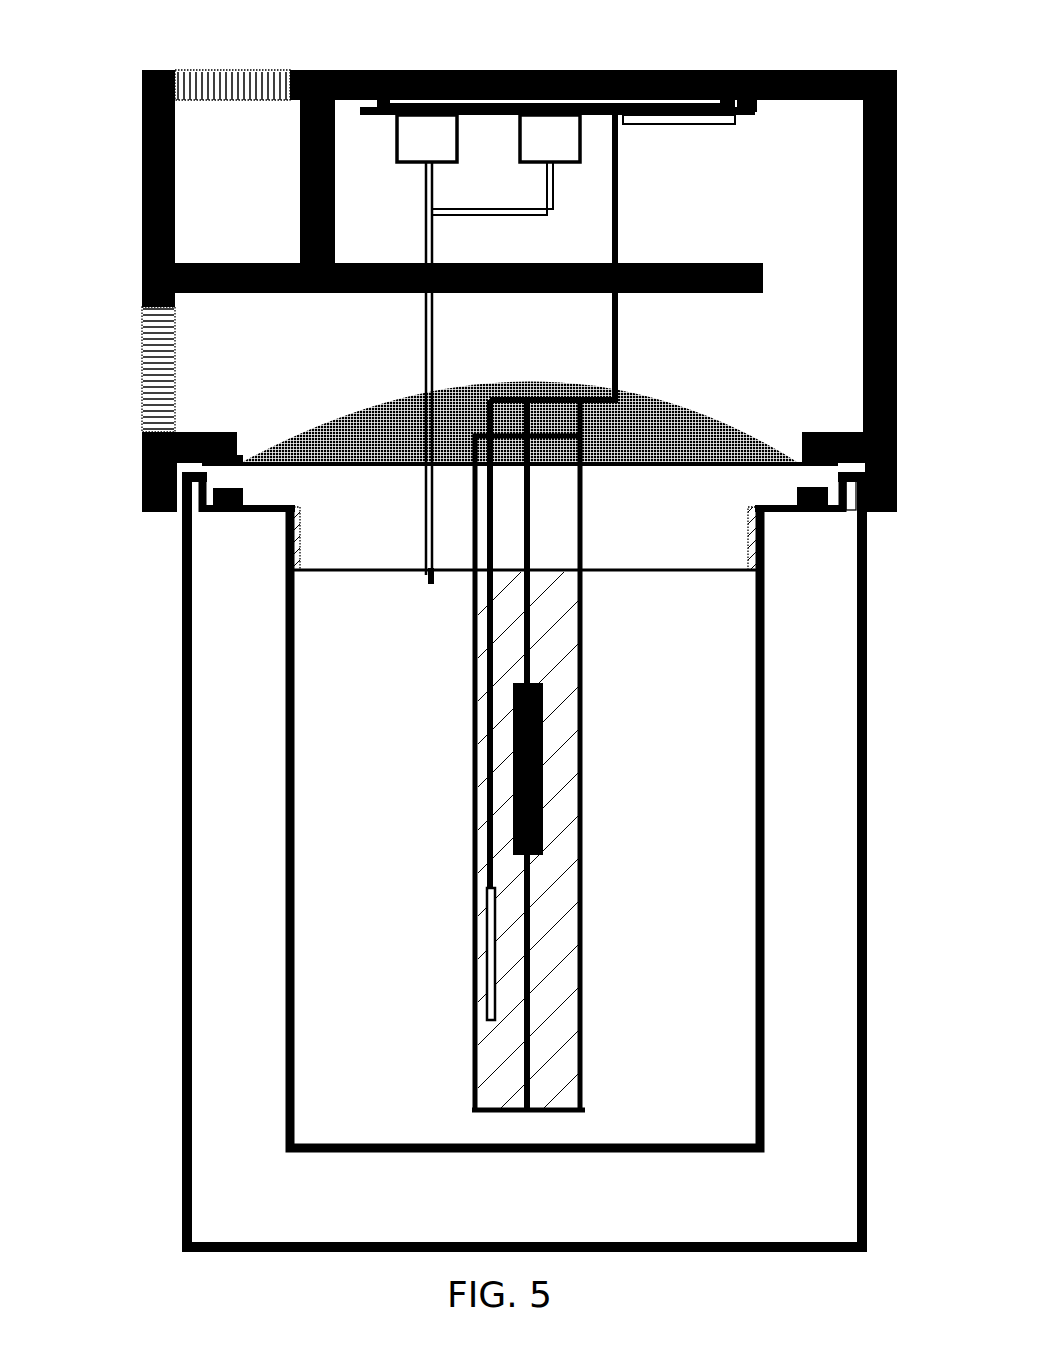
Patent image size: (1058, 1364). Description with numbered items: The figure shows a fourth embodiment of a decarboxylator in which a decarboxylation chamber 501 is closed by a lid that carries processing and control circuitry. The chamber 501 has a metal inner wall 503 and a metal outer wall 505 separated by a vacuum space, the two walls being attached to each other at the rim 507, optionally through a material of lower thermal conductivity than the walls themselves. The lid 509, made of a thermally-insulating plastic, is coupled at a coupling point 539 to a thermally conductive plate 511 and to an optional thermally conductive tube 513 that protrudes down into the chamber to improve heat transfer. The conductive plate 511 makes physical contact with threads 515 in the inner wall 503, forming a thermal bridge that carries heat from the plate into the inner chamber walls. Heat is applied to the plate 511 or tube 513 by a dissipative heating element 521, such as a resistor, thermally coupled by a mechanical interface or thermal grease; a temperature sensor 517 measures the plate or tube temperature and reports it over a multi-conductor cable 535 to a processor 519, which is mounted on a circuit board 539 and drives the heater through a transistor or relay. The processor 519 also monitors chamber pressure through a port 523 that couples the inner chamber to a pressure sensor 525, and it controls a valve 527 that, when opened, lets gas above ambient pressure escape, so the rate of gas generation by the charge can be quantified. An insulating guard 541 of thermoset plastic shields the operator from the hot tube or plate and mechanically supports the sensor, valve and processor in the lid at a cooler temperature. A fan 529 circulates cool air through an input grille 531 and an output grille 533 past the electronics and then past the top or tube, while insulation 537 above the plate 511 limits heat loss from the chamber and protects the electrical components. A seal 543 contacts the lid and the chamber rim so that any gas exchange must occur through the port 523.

The chamber 501 is at (527, 860).
The inner wall 503 is at (755, 770).
The outer wall 505 is at (867, 838).
The rim 507 is at (850, 490).
The lid 509 is at (563, 51).
The thermally conductive plate 511 is at (520, 516).
The thermally conductive tube 513 is at (583, 985).
The threads 515 is at (288, 535).
The temperature sensor 517 is at (487, 965).
The processor 519 is at (648, 124).
The heating element 521 is at (545, 790).
The port 523 is at (428, 583).
The pressure sensor 525 is at (406, 152).
The valve 527 is at (546, 152).
The fan 529 is at (300, 152).
The input grille 531 is at (203, 70).
The output grille 533 is at (142, 355).
The cable 535 is at (612, 312).
The insulation 537 is at (367, 432).
The coupling point 539 is at (757, 112).
The insulating guard 541 is at (141, 113).
The seal 543 is at (797, 493).